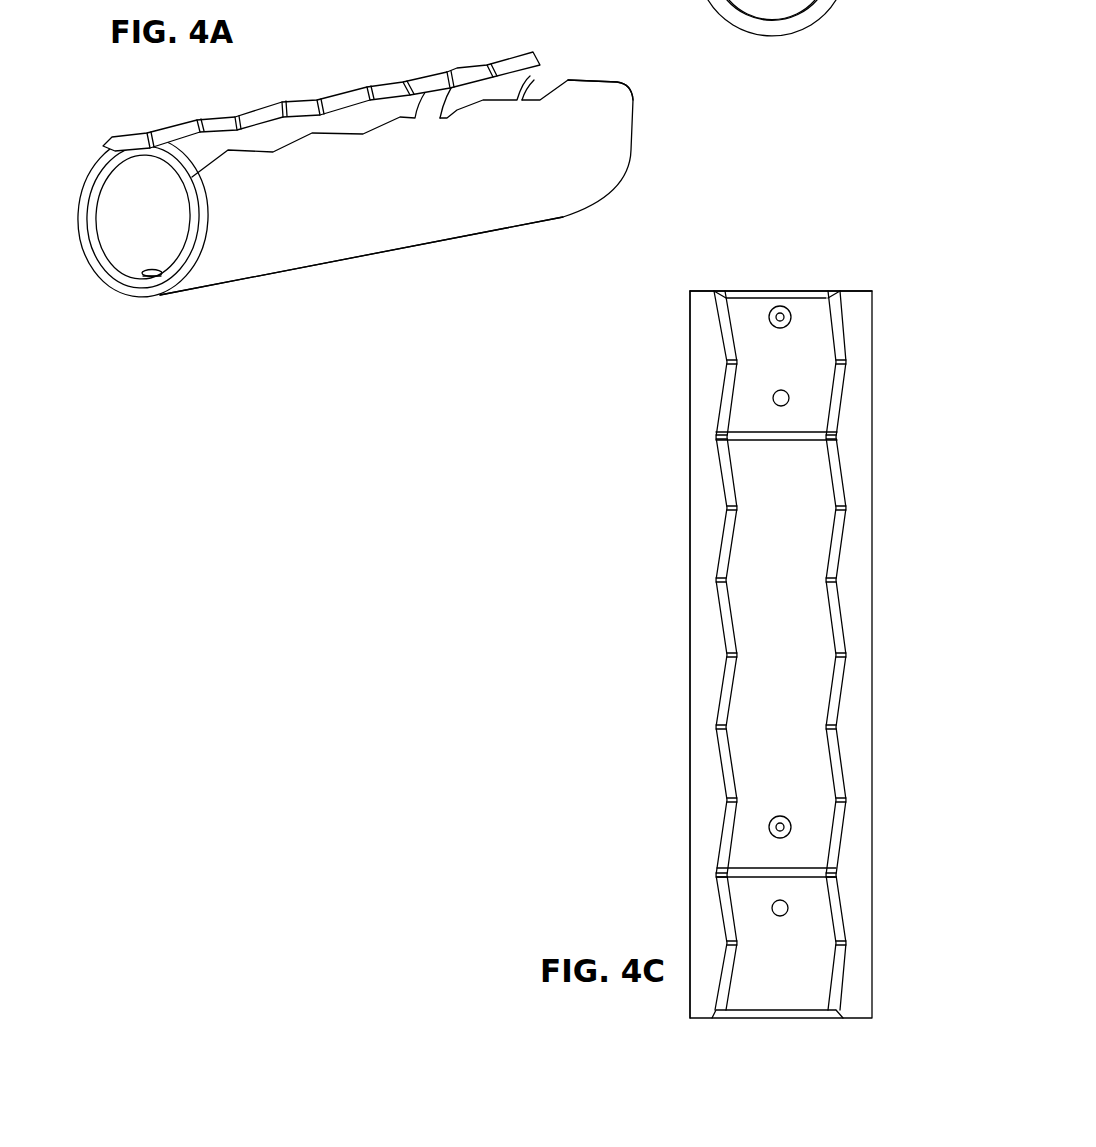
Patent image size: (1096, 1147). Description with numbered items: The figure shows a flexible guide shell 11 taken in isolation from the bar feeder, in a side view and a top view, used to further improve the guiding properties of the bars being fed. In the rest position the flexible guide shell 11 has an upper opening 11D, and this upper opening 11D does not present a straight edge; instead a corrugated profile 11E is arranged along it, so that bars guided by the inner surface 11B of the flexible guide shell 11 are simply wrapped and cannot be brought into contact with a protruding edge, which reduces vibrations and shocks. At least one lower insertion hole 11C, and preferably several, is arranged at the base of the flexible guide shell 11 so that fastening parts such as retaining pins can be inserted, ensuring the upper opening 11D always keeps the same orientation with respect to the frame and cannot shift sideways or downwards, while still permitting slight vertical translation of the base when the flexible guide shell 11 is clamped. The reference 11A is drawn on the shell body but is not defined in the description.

In FIG. 4A, the flexible guide shell 11 is at (212, 312).
In FIG. 4C, the flexible guide shell 11 is at (641, 504).
In FIG. 4A, the tube body 11A is at (257, 252).
In FIG. 4C, the tube body 11A is at (876, 610).
In FIG. 4A, the inner surface 11B is at (118, 200).
In FIG. 4C, the inner surface 11B is at (808, 660).
In FIG. 4A, the lower insertion hole 11C is at (160, 270).
In FIG. 4C, the lower insertion hole 11C is at (784, 312).
In FIG. 4A, the upper opening 11D is at (596, 74).
In FIG. 4C, the upper opening 11D is at (785, 253).
In FIG. 4A, the corrugated profile 11E is at (445, 72).
In FIG. 4C, the corrugated profile 11E is at (747, 465).